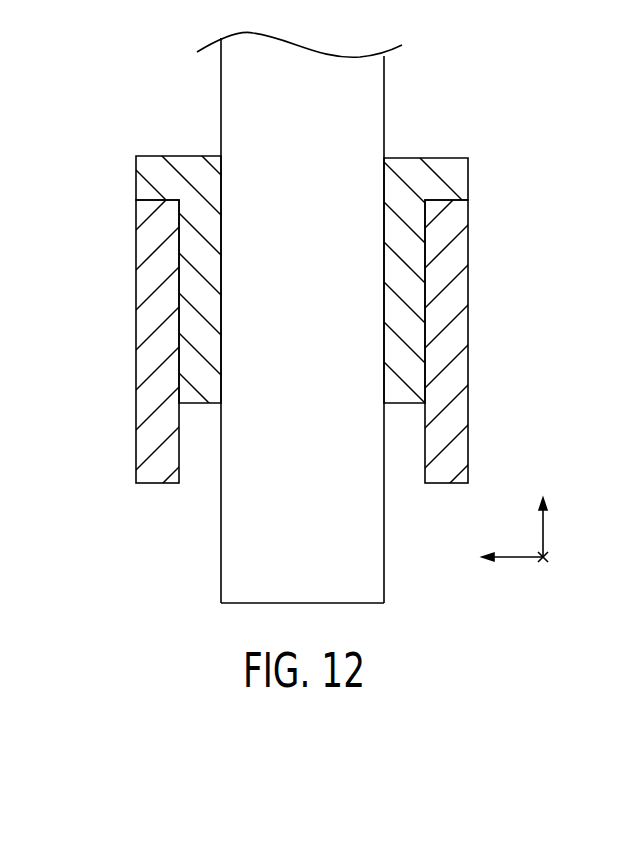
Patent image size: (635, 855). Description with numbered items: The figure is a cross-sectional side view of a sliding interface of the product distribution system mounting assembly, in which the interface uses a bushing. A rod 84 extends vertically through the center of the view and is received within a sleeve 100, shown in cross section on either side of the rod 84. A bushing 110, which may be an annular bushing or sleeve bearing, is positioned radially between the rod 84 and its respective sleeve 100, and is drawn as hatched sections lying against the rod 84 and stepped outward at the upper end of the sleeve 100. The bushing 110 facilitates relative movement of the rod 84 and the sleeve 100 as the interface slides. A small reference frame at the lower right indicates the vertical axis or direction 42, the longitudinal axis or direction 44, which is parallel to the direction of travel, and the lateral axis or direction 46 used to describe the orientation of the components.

The rod 84 is at (386, 98).
The bushing 110 is at (445, 168).
The sleeve 100 is at (468, 220).
The vertical axis or direction 42 is at (543, 532).
The longitudinal axis or direction 44 is at (518, 559).
The lateral axis or direction 46 is at (543, 563).